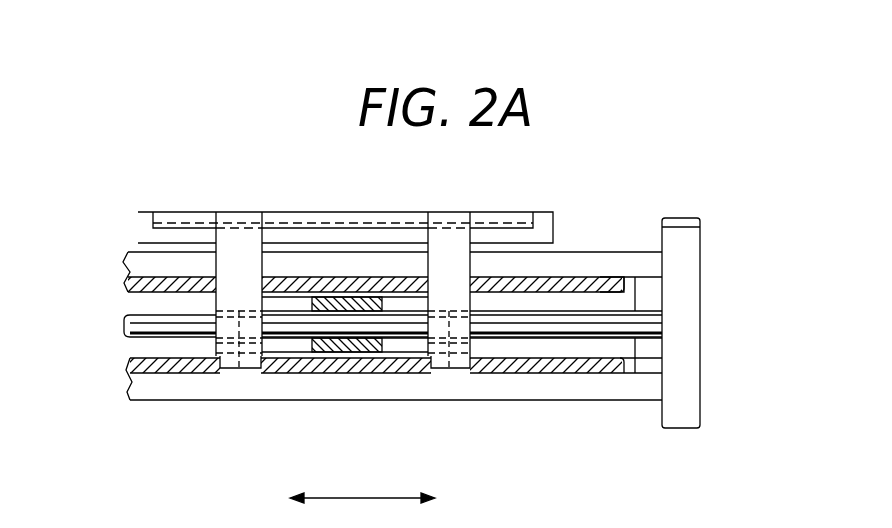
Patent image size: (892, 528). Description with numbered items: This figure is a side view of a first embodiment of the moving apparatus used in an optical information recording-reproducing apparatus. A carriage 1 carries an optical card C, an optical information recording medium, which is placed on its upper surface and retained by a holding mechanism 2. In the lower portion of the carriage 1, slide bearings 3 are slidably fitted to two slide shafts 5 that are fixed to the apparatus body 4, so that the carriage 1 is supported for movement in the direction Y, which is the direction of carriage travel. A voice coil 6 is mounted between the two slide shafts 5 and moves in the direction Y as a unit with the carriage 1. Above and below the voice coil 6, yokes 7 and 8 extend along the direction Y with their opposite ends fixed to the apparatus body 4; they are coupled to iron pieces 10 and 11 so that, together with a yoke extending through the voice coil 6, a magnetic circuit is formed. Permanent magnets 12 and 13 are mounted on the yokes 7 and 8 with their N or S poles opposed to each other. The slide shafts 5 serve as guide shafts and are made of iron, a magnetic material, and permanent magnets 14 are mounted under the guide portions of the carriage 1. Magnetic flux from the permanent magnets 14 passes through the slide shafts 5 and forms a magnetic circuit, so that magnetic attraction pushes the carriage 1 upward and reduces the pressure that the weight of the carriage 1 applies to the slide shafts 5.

The carriage 1 is at (446, 236).
The holding mechanism 2 is at (508, 215).
The slide bearings 3 is at (225, 357).
The apparatus body 4 is at (683, 318).
The slide shafts 5 is at (145, 322).
The voice coil 6 is at (370, 305).
The yoke 7 is at (582, 258).
The yoke 8 is at (555, 387).
The iron piece 10 is at (650, 292).
The iron piece 11 is at (650, 350).
The permanent magnet 12 is at (620, 281).
The permanent magnet 13 is at (587, 362).
The permanent magnets 14 is at (240, 360).
The optical card C is at (331, 228).
The direction Y is at (362, 485).